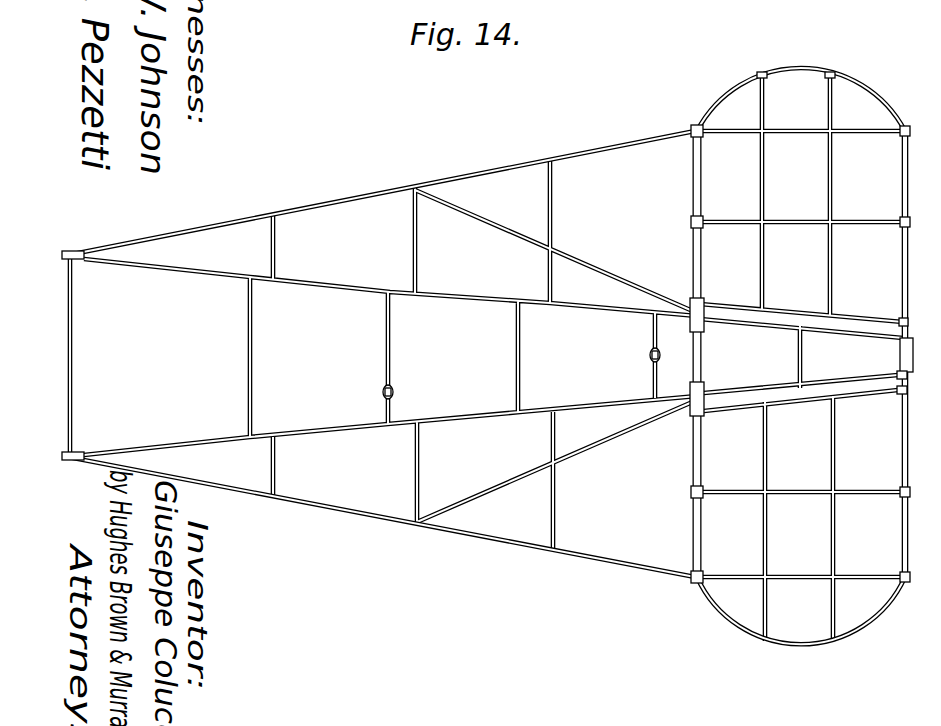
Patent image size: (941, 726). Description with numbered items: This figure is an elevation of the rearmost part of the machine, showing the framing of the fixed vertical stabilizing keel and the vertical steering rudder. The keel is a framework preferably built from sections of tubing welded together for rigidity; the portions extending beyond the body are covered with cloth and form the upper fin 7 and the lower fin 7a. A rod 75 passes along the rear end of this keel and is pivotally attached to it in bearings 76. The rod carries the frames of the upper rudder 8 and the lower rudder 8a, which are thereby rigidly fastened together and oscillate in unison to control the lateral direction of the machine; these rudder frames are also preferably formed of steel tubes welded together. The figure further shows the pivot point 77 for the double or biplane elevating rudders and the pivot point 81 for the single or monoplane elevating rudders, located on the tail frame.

The upper fin 7 is at (615, 160).
The lower fin 7a is at (606, 558).
The upper rudder 8 is at (800, 78).
The lower rudder 8a is at (799, 628).
The rod 75 is at (703, 358).
The bearings 76 is at (697, 396).
The pivot point for the biplane elevating rudders 77 is at (396, 391).
The pivot point for the monoplane elevating rudders 81 is at (648, 355).